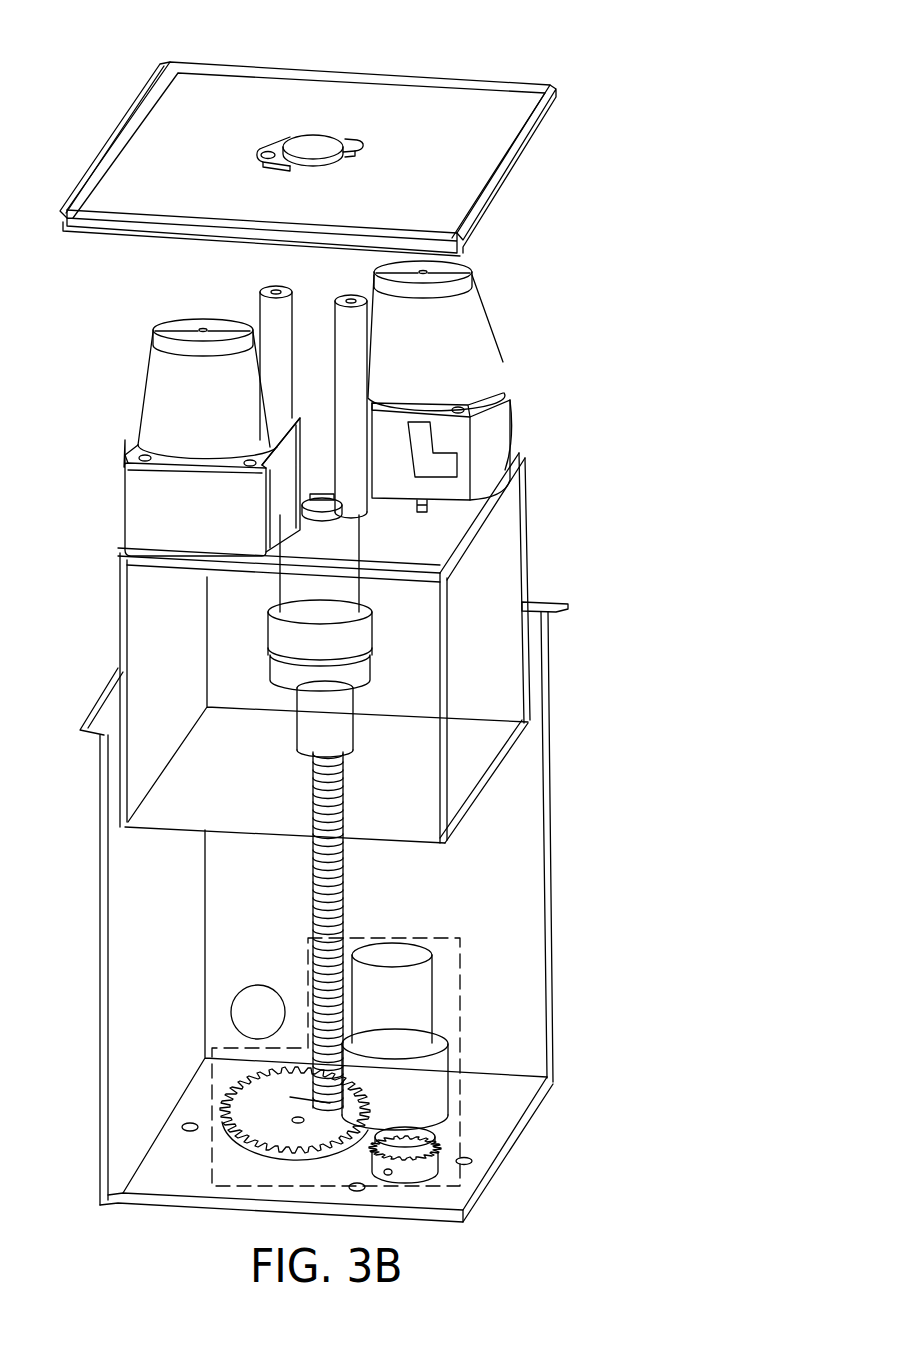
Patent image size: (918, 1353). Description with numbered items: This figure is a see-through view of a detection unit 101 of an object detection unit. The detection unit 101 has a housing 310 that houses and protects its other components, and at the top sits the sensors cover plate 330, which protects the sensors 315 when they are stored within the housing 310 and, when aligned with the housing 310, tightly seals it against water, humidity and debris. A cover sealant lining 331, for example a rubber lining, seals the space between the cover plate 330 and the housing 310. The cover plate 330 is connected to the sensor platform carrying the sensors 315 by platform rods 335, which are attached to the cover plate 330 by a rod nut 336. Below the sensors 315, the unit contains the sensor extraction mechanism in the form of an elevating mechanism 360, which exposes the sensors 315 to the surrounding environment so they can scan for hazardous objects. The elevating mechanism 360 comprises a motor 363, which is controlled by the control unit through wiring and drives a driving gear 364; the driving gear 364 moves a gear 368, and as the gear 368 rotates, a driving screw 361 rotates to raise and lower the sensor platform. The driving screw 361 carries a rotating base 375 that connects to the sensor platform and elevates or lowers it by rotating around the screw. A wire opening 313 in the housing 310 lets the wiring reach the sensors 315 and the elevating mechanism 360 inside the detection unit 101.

The detection unit 101 is at (599, 214).
The housing 310 is at (472, 760).
The wire opening 313 is at (261, 985).
The sensors 315 is at (463, 333).
The sensors cover plate 330 is at (413, 117).
The cover sealant lining 331 is at (113, 150).
The platform rods 335 is at (343, 325).
The rod nut 336 is at (300, 145).
The elevating mechanism 360 is at (357, 1031).
The driving screw 361 is at (320, 882).
The motor 363 is at (433, 1070).
The driving gear 364 is at (430, 1138).
The gear 368 is at (263, 1097).
The rotating base 375 is at (300, 720).